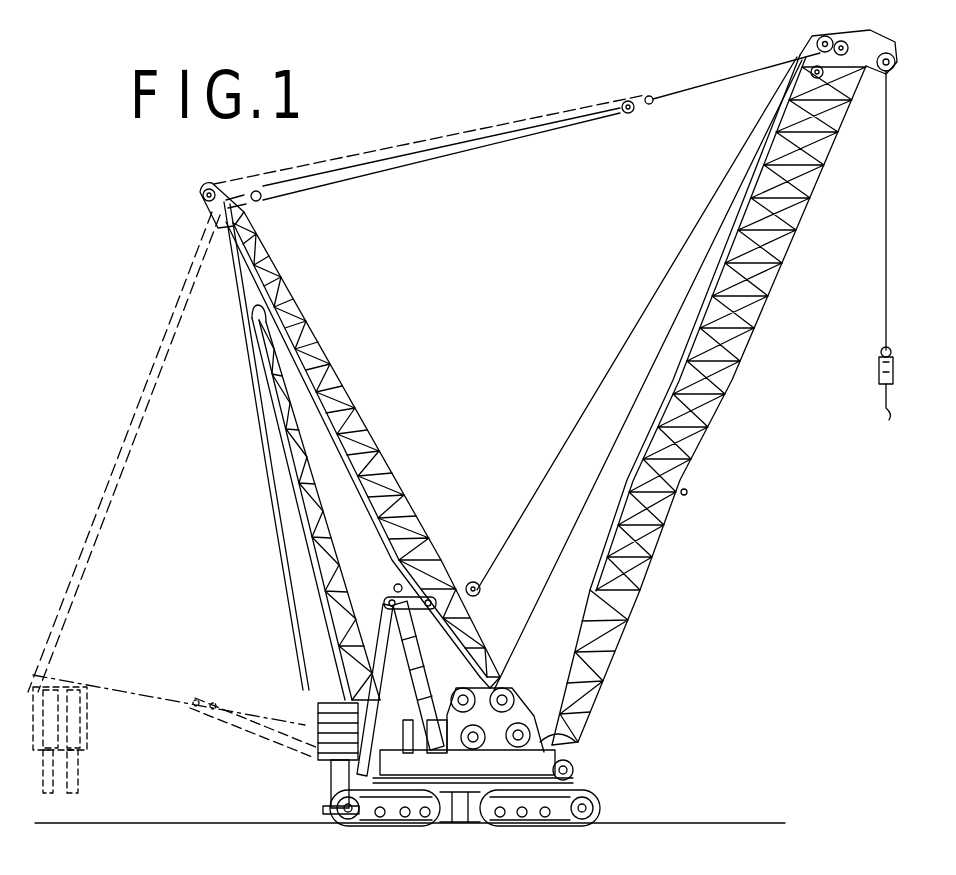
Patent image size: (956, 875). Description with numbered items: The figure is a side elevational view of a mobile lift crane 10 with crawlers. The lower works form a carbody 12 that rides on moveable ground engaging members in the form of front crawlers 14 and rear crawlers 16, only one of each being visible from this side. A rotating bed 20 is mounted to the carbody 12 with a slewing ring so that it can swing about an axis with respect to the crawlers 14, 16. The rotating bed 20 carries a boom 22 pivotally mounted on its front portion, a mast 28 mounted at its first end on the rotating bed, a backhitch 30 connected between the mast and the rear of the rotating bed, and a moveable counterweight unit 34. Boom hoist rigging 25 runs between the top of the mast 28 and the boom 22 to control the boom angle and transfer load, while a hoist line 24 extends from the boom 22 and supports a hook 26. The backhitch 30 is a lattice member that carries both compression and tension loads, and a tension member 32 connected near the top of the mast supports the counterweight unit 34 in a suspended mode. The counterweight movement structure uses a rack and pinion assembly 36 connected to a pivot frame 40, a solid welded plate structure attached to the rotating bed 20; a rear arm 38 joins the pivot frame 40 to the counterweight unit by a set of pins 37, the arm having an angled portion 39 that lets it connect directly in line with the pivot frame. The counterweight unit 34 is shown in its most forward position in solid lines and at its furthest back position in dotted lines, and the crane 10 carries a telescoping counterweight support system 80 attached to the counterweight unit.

The mobile lift crane 10 is at (668, 590).
The carbody 12 is at (462, 790).
The front crawlers 14 is at (596, 792).
The rear crawlers 16 is at (330, 804).
The rotating bed 20 is at (543, 758).
The boom 22 is at (684, 497).
The hoist line 24 is at (885, 282).
The boom hoist rigging 25 is at (678, 90).
The hook 26 is at (877, 370).
The mast 28 is at (352, 396).
The backhitch 30 is at (286, 474).
The tension member 32 is at (280, 552).
The moveable counterweight unit 34 is at (80, 726).
The rack and pinion assembly 36 is at (424, 666).
The pins 37 is at (398, 585).
The rear arm 38 is at (337, 683).
The angled portion 39 is at (386, 600).
The pivot frame 40 is at (374, 618).
The counterweight support system 80 is at (80, 771).